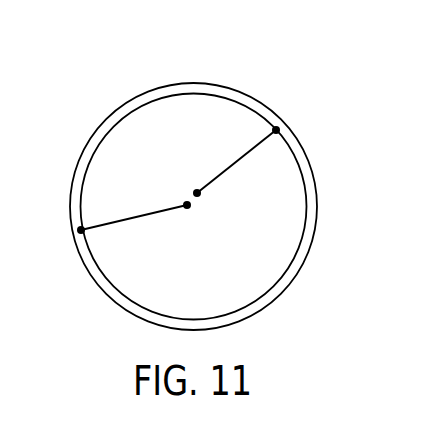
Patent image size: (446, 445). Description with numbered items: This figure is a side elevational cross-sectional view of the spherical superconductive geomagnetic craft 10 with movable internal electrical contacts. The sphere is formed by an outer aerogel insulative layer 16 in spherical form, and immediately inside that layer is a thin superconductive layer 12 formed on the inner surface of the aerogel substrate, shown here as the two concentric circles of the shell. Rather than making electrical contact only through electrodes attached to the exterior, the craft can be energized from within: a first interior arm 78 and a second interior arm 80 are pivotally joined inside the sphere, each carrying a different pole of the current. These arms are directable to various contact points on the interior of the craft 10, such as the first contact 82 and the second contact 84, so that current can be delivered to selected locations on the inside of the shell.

The superconductive geomagnetic craft 10 is at (273, 81).
The thin superconductive layer 12 is at (306, 189).
The outer aerogel insulative layer 16 is at (282, 126).
The first interior arm 78 is at (142, 219).
The second interior arm 80 is at (235, 166).
The first contact 82 is at (263, 125).
The second contact 84 is at (83, 226).